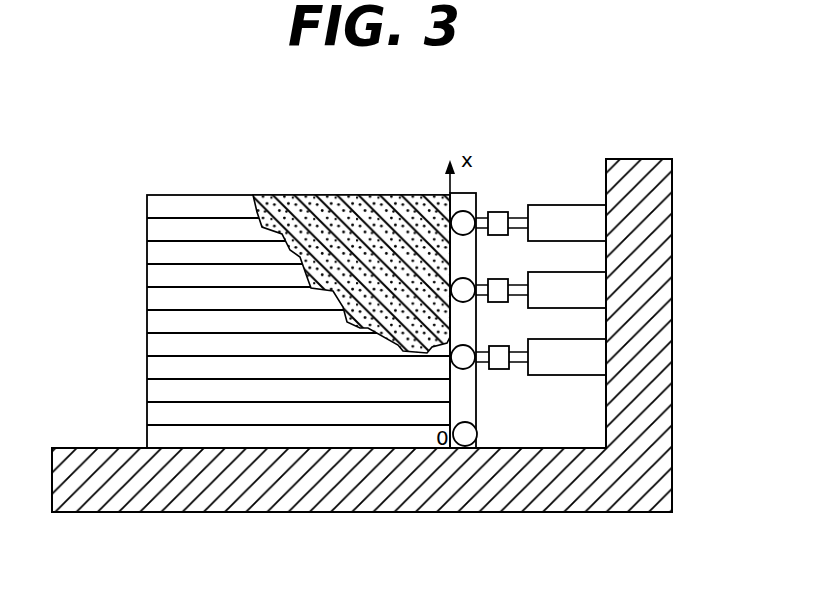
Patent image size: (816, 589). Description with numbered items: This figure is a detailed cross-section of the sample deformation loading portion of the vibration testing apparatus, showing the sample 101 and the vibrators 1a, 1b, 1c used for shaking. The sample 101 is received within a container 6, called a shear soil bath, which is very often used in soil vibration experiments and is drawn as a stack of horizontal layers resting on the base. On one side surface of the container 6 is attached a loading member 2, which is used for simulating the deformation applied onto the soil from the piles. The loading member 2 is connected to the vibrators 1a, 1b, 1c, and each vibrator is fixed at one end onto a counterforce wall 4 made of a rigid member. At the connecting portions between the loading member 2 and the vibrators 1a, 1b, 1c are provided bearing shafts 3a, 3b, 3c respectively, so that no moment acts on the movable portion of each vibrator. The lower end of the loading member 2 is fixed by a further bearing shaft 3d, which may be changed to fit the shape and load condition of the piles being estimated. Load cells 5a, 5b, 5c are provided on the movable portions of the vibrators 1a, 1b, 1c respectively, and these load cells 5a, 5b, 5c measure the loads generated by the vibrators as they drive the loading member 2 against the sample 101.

The vibrator 1a is at (596, 222).
The vibrator 1b is at (597, 290).
The vibrator 1c is at (597, 358).
The loading member 2 is at (463, 192).
The bearing shaft 3a is at (469, 234).
The bearing shaft 3b is at (469, 301).
The bearing shaft 3c is at (468, 368).
The bearing shaft 3d is at (466, 447).
The counterforce wall 4 is at (673, 448).
The load cell 5a is at (510, 207).
The load cell 5b is at (510, 275).
The load cell 5c is at (511, 342).
The container 6 is at (148, 228).
The sample 101 is at (358, 195).